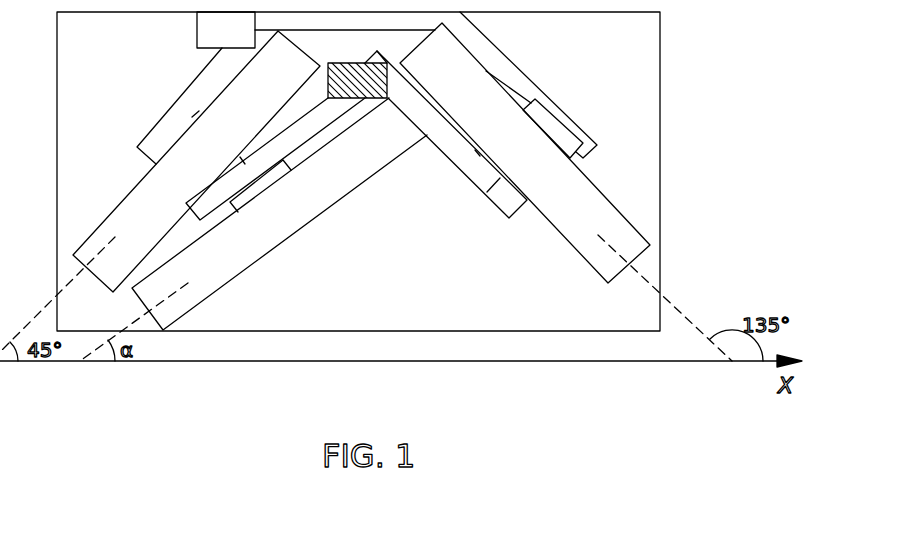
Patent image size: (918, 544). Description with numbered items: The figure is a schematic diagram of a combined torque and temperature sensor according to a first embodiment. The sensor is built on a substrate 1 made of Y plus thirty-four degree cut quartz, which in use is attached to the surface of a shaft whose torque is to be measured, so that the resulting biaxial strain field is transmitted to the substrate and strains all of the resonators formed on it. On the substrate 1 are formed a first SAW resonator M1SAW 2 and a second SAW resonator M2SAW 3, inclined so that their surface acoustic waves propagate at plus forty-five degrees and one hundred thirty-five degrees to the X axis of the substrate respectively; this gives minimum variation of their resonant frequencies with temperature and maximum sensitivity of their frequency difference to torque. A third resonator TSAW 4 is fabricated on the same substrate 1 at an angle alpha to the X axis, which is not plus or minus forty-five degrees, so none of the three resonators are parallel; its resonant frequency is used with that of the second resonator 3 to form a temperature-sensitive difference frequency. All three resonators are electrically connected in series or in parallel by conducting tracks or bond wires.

The substrate 1 is at (643, 74).
The first SAW resonator M1SAW 2 is at (168, 112).
The second SAW resonator M2SAW 3 is at (550, 207).
The third resonator TSAW 4 is at (224, 273).